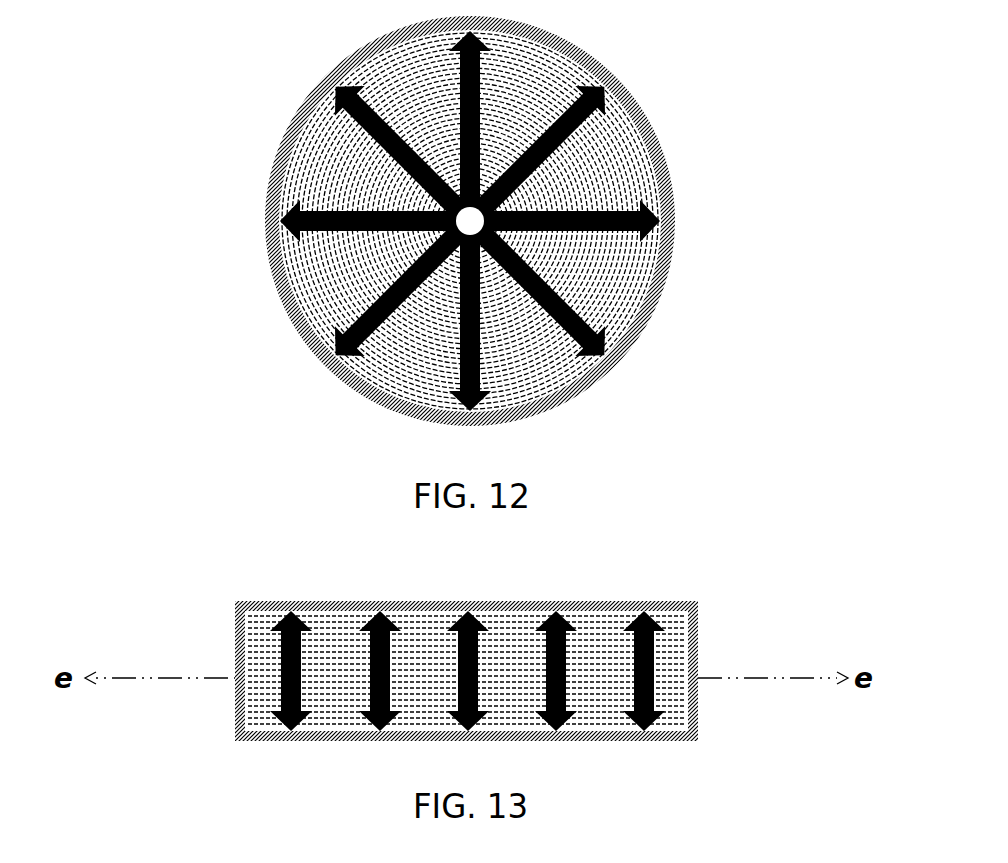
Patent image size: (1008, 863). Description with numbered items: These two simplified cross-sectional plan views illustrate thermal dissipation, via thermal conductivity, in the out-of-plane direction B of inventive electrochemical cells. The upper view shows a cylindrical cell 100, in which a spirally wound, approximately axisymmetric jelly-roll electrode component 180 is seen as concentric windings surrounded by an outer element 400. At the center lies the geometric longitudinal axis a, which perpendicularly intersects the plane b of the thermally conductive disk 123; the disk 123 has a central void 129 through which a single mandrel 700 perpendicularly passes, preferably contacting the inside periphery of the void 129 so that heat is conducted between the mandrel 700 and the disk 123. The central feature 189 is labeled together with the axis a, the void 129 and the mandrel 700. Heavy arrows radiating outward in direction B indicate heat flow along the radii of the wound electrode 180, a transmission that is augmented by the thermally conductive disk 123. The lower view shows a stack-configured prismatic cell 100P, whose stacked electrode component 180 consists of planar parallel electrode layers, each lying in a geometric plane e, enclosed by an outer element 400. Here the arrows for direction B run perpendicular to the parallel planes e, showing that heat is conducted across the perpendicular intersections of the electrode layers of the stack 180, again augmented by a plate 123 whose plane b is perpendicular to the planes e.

In FIG. 12, the cylindrical cell 100 is at (698, 85).
In FIG. 13, the prismatic cell 100P is at (795, 585).
In FIG. 12, the outer shell / housing 400 is at (273, 287).
In FIG. 13, the outer shell / housing 400 is at (337, 733).
In FIG. 12, the thermally conductive plate 123 is at (378, 221).
In FIG. 13, the thermally conductive plate 123 is at (494, 729).
In FIG. 12, the electrode component 180 is at (325, 148).
In FIG. 13, the electrode component 180 is at (590, 700).
In FIG. 12, the geometric longitudinal axis a is at (675, 321).
In FIG. 12, the central void 129 is at (675, 321).
In FIG. 12, the central core 189 is at (675, 321).
In FIG. 12, the mandrel 700 is at (467, 216).